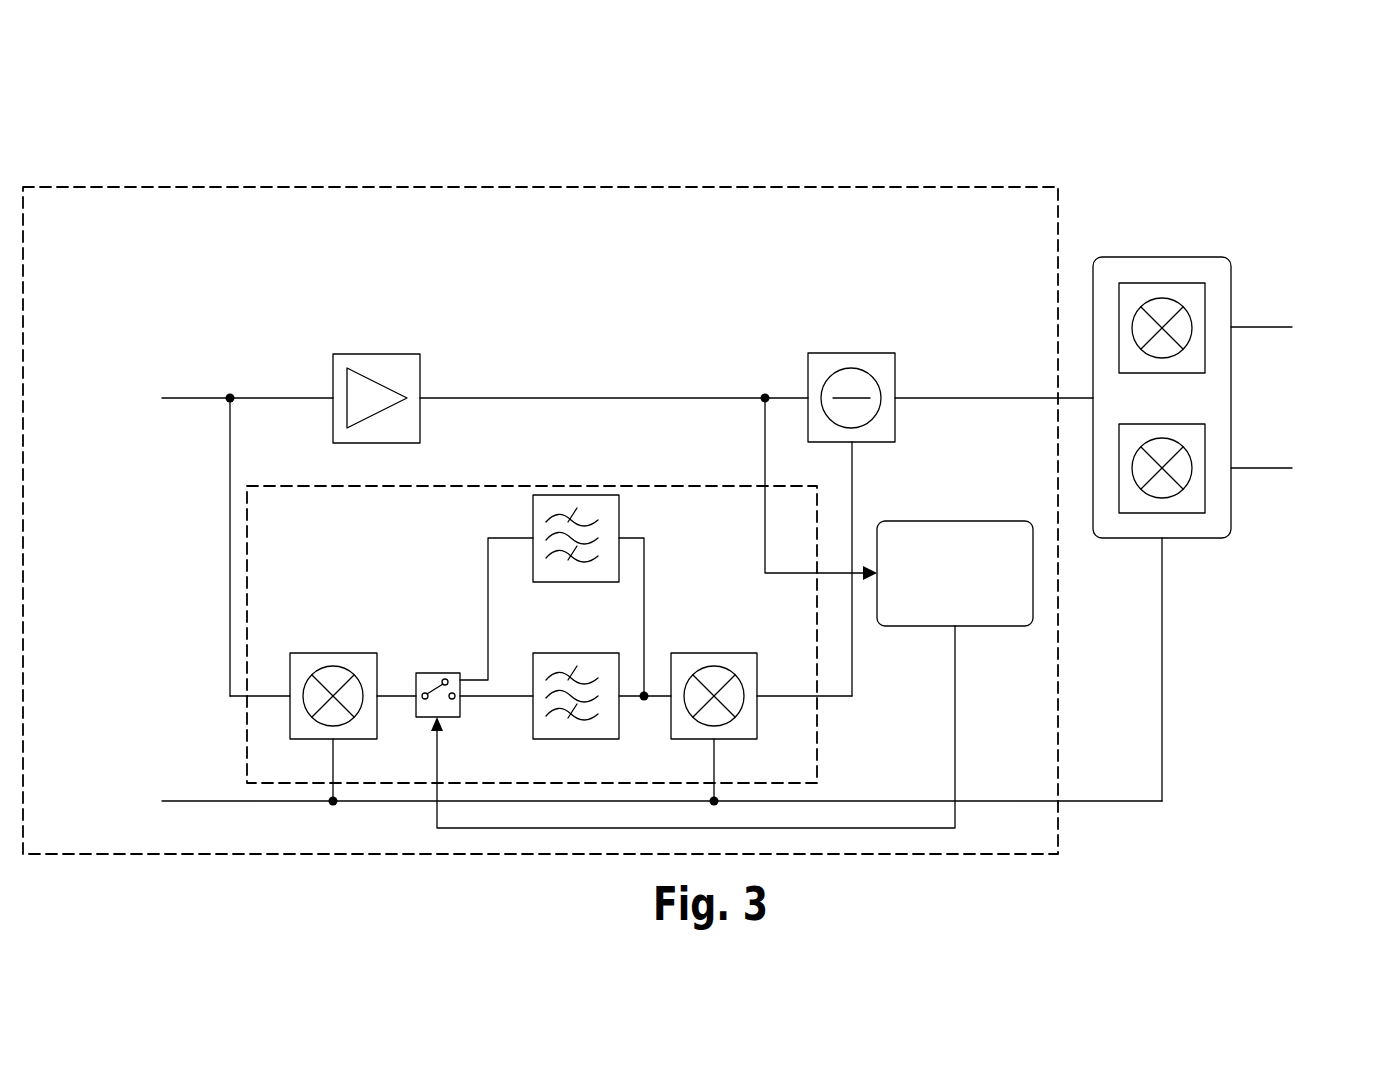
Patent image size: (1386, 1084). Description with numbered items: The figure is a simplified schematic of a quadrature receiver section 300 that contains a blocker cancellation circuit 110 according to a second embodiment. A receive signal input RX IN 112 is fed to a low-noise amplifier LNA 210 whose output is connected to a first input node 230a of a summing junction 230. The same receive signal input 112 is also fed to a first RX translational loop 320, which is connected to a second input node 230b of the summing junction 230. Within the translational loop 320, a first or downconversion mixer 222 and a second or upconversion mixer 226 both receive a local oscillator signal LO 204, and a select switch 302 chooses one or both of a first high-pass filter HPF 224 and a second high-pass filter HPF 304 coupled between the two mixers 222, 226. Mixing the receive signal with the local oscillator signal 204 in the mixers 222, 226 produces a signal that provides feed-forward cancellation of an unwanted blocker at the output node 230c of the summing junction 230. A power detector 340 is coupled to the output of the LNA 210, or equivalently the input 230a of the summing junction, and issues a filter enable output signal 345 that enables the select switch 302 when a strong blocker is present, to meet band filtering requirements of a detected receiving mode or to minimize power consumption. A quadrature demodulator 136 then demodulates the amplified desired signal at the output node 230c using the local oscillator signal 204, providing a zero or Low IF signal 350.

The quadrature receiver section 300 is at (704, 467).
The blocker cancellation circuit 110 is at (370, 187).
The receive signal input RX IN 112 is at (196, 398).
The low-noise amplifier LNA 210 is at (377, 354).
The summing junction 230 is at (852, 353).
The first input node 230a is at (800, 392).
The second input node 230b is at (860, 452).
The output node 230c is at (902, 408).
The quadrature demodulator 136 is at (1163, 257).
The zero or Low IF signal 350 is at (1300, 312).
The first RX translational loop 320 is at (677, 486).
The first mixer 222 is at (333, 653).
The select switch 302 is at (450, 717).
The second high-pass filter HPF 304 is at (553, 495).
The first high-pass filter HPF 224 is at (553, 653).
The second mixer 226 is at (714, 653).
The local oscillator signal LO 204 is at (198, 803).
The power detector 340 is at (940, 521).
The filter enable output signal 345 is at (955, 685).